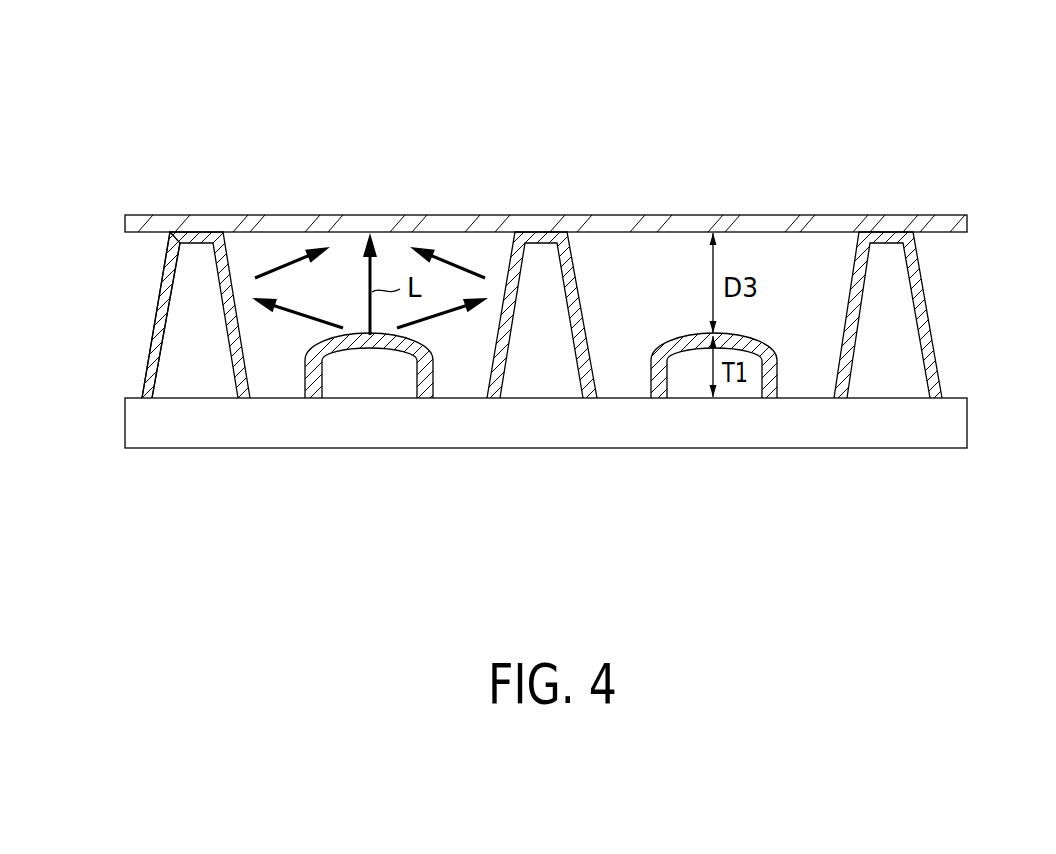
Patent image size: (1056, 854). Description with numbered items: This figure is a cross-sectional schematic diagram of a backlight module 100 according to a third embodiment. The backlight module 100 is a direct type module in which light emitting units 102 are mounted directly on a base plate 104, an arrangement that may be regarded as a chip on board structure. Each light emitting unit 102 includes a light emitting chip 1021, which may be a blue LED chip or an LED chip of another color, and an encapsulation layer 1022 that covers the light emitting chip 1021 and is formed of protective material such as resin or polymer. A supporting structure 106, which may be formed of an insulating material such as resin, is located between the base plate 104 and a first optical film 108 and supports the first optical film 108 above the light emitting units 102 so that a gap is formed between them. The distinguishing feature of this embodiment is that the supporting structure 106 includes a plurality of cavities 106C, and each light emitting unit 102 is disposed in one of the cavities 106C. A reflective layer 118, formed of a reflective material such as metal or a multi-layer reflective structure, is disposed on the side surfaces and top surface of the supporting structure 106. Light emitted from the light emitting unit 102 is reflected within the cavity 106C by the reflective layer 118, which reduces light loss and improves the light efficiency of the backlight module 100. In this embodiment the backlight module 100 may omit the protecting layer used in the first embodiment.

The backlight module 100 is at (897, 115).
The light emitting unit 102 is at (541, 447).
The light emitting chip 1021 is at (369, 428).
The encapsulation layer 1022 is at (420, 378).
The base plate 104 is at (968, 422).
The supporting structure 106 is at (178, 345).
The cavity 106C is at (620, 273).
The first optical film 108 is at (968, 226).
The reflective layer 118 is at (163, 300).